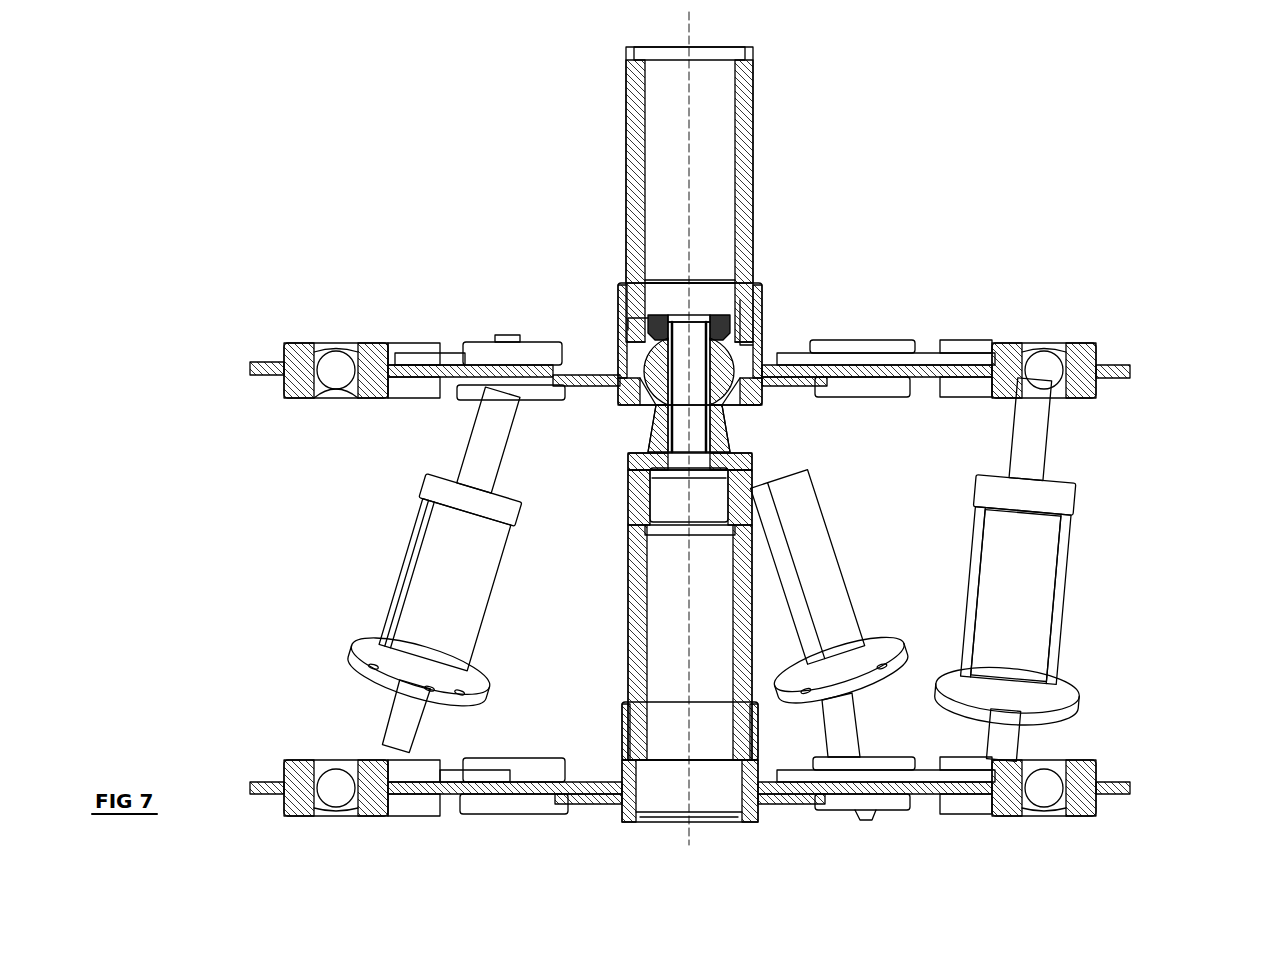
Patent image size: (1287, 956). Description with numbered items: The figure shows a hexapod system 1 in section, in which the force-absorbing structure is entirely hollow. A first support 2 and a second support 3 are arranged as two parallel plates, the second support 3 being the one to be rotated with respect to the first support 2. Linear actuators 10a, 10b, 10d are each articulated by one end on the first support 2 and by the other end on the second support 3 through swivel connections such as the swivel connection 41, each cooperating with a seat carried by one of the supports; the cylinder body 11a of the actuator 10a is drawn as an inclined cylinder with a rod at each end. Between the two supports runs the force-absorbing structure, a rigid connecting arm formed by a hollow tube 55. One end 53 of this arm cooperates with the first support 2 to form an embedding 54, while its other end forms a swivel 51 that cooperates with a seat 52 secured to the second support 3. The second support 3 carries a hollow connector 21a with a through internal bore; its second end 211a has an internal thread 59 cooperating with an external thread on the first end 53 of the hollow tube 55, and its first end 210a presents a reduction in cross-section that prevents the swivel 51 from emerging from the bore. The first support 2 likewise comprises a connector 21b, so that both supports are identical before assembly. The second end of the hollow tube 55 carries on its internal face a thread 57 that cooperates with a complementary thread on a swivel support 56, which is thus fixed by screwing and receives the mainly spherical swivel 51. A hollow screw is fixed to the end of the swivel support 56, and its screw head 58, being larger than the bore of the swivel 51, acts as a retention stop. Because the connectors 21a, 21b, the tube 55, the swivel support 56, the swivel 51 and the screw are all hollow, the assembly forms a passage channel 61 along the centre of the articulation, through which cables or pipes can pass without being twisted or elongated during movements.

The hexapod system 1 is at (921, 158).
The first support 2 is at (1111, 786).
The second support 3 is at (1107, 362).
The linear actuator 10a is at (1055, 490).
The linear actuator 10b is at (834, 610).
The linear actuator 10d is at (395, 571).
The actuator cylinder body 11a is at (1045, 598).
The connector 21a is at (618, 396).
The connector 21b is at (763, 762).
The swivel connection 41 is at (336, 360).
The swivel 51 is at (748, 365).
The seat 52 is at (750, 395).
The first end of the hollow tube 53 is at (626, 291).
The embedding 54 is at (499, 196).
The hollow tube 55 is at (636, 592).
The swivel support 56 is at (738, 447).
The thread 57 is at (748, 473).
The screw head 58 is at (730, 318).
The internal thread 59 is at (640, 320).
The passage channel 61 is at (690, 515).
The first end of the connector 210a is at (745, 408).
The second end of the connector 211a is at (743, 338).